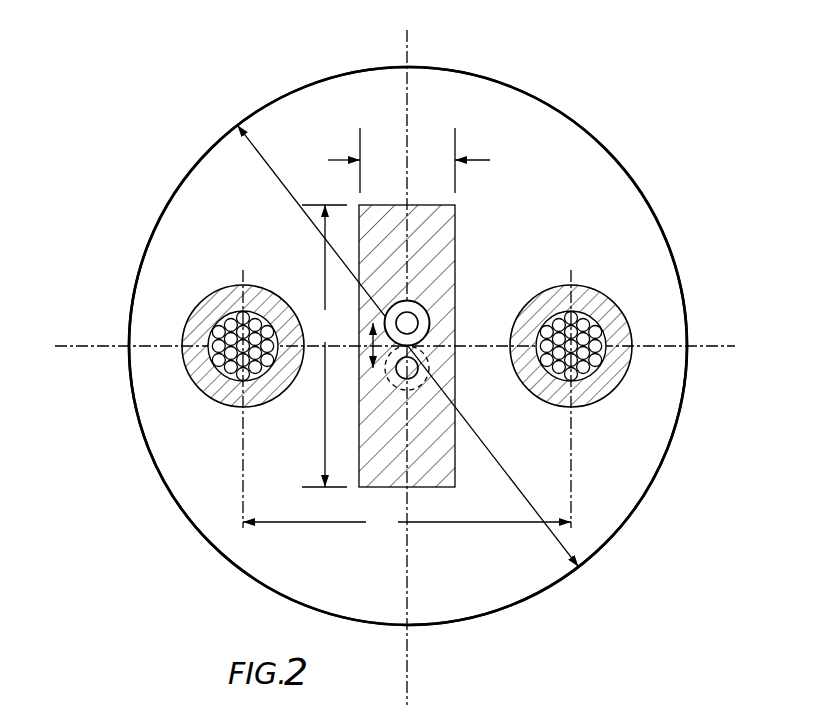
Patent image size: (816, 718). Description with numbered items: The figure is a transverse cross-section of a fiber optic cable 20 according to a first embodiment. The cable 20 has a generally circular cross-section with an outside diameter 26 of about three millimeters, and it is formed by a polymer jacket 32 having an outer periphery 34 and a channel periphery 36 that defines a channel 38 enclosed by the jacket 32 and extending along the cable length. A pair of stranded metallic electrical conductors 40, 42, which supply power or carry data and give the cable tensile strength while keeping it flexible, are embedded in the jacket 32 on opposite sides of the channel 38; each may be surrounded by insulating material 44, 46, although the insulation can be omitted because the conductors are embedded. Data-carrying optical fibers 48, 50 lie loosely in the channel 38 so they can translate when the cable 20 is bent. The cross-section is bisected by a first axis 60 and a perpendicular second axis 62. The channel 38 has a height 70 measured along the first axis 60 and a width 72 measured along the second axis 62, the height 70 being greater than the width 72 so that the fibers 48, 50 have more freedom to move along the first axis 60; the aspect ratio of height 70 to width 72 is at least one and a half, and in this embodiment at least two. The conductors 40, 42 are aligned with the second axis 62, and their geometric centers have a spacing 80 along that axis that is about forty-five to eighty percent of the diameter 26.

The fiber optic cable 20 is at (106, 86).
The outside diameter 26 is at (580, 568).
The polymer jacket 32 is at (579, 129).
The outer periphery 34 is at (172, 495).
The channel periphery 36 is at (437, 333).
The channel 38 is at (440, 249).
The first electrical conductor 40 is at (223, 385).
The second electrical conductor 42 is at (592, 391).
The insulating material 44 is at (220, 291).
The insulating material 46 is at (610, 308).
The optical fiber 48 is at (429, 310).
The optical fiber 50 is at (427, 352).
The first axis 60 is at (406, 355).
The second axis 62 is at (411, 346).
The channel height 70 is at (324, 346).
The channel width 72 is at (409, 160).
The spacing 80 is at (407, 523).